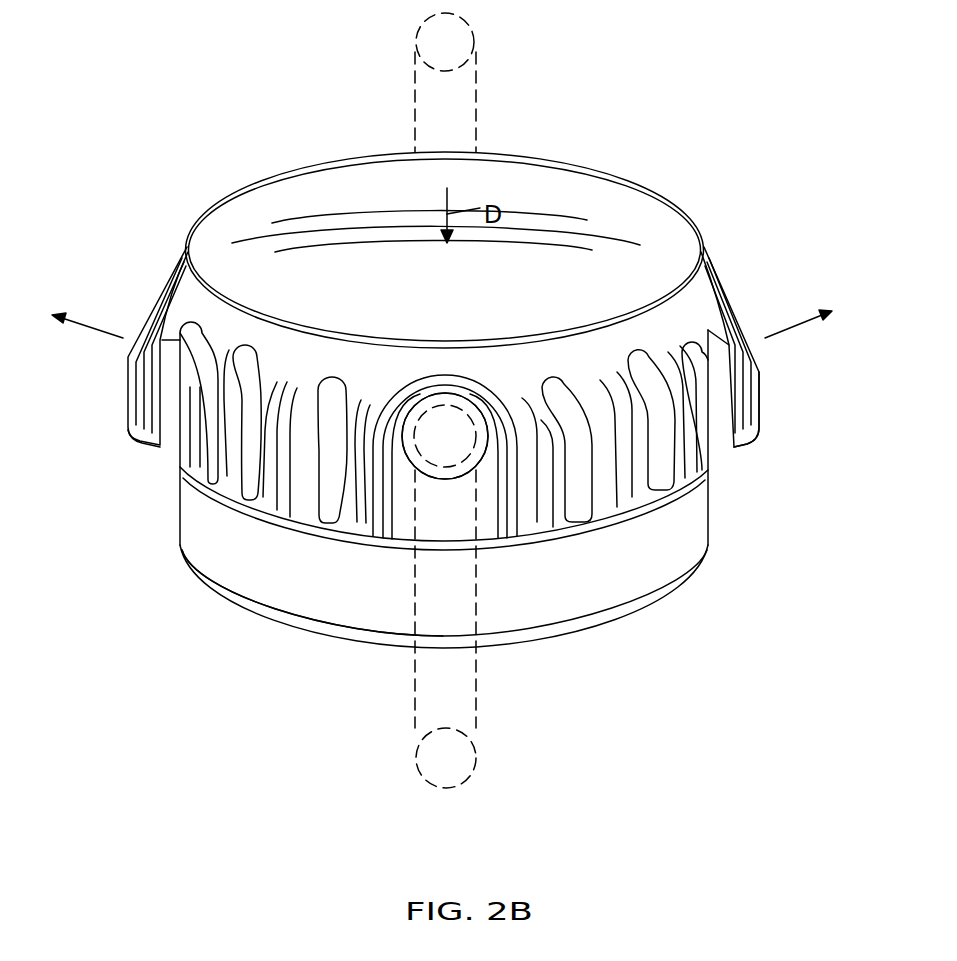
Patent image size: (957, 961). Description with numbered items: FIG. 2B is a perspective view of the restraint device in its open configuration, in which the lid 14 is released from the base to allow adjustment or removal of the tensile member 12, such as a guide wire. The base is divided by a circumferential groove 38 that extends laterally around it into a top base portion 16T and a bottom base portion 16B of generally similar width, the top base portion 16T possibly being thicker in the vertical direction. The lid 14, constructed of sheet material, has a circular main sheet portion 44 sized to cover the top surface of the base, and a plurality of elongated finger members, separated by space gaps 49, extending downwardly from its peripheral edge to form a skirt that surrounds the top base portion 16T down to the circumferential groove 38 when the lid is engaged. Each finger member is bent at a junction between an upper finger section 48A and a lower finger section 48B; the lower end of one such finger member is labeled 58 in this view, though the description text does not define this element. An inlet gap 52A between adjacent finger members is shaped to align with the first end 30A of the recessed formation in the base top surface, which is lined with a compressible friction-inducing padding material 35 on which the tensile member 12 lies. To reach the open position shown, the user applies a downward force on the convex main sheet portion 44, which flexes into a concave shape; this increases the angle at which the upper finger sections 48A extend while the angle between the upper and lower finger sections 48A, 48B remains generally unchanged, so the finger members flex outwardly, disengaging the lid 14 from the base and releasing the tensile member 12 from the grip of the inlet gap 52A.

The lid 14 is at (622, 192).
The main sheet portion 44 is at (305, 187).
The top base portion 16T is at (188, 350).
The tab bottom edge 58 is at (160, 450).
The upper finger section 48A is at (720, 282).
The lower finger section 48B is at (759, 402).
The space gaps 49 is at (325, 398).
The inlet gap 52A is at (484, 398).
The padding material 35 is at (447, 478).
The tensile member 12 is at (452, 417).
The first end 30A is at (438, 479).
The bottom base portion 16B is at (712, 517).
The circumferential groove 38 is at (287, 535).